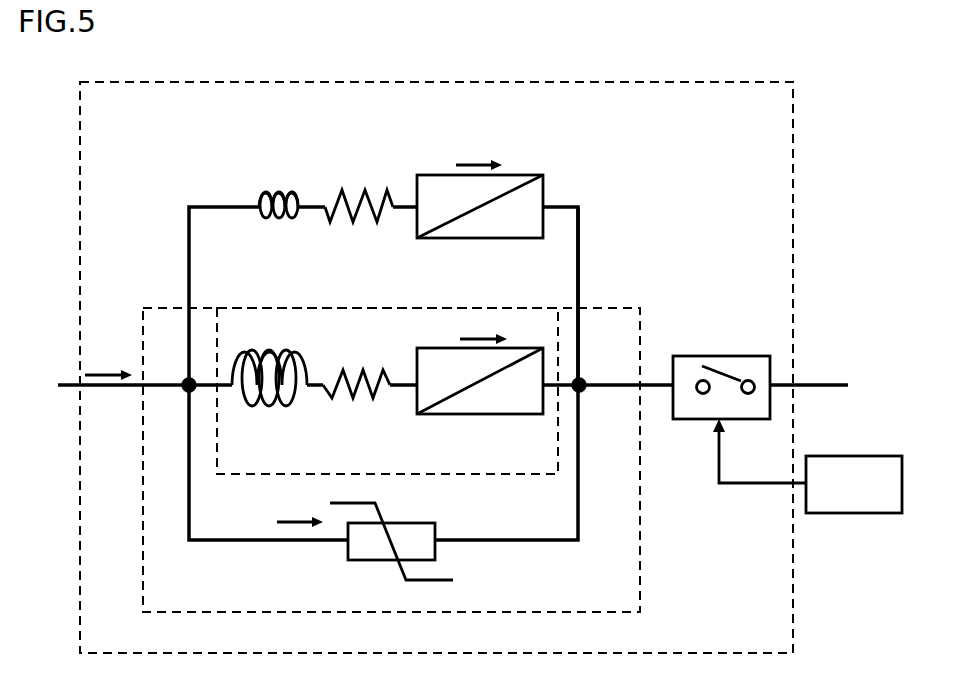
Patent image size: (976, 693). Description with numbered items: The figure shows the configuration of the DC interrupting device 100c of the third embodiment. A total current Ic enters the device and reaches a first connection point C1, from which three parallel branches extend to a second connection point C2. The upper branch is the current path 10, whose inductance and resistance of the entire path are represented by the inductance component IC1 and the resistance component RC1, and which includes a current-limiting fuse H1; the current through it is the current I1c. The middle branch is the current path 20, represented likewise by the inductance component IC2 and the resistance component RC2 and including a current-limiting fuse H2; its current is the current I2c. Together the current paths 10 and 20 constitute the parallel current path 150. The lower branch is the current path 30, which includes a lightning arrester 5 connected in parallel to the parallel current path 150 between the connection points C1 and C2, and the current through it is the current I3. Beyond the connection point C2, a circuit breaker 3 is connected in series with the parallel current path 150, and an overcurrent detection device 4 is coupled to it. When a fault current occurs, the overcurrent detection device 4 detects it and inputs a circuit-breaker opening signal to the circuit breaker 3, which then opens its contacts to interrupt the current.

The DC interrupting device 100c is at (176, 82).
The current path 10 is at (376, 143).
The current path 20 is at (350, 298).
The current path 30 is at (142, 510).
The parallel current path 150 is at (651, 185).
The circuit breaker 3 is at (719, 356).
The overcurrent detection device 4 is at (848, 456).
The lightning arrester 5 is at (348, 562).
The connection point C1 is at (187, 380).
The connection point C2 is at (581, 381).
The inductance component IC1 is at (275, 190).
The inductance component IC2 is at (255, 350).
The resistance component RC1 is at (342, 190).
The resistance component RC2 is at (359, 365).
The current-limiting fuse H1 is at (436, 175).
The current-limiting fuse H2 is at (429, 348).
The total current Ic is at (106, 369).
The current I1c is at (475, 163).
The current I2c is at (478, 336).
The current I3 is at (303, 521).